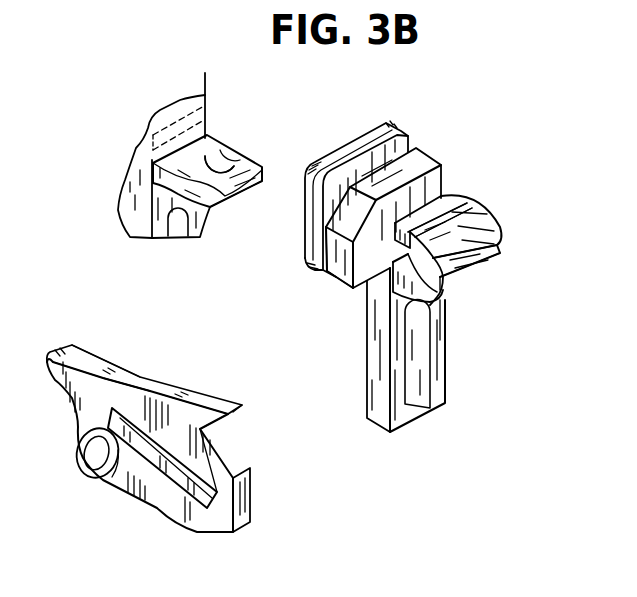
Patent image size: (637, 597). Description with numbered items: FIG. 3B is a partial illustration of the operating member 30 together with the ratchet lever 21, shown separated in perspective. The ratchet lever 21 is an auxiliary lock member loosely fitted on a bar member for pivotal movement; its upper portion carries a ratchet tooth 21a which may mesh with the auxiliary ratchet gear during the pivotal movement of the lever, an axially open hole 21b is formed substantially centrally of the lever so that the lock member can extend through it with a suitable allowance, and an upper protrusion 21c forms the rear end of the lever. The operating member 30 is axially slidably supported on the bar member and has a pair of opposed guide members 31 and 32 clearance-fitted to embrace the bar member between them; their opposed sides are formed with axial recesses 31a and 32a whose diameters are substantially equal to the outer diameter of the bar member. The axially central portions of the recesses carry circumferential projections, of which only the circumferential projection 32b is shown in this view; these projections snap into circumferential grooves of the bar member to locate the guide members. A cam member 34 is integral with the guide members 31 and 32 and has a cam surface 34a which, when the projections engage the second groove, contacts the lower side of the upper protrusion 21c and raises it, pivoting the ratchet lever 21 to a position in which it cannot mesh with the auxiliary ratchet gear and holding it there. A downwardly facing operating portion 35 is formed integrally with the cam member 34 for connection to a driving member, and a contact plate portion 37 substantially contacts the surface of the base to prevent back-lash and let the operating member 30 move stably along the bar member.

The ratchet lever 21 is at (155, 500).
The ratchet tooth 21a is at (208, 410).
The axially open hole 21b is at (192, 463).
The upper protrusion 21c is at (93, 367).
The operating member 30 is at (470, 287).
The guide member 31 is at (472, 215).
The axial recess 31a is at (416, 225).
The guide member 32 is at (210, 207).
The axial recess 32a is at (243, 190).
The circumferential projection 32b is at (233, 170).
The cam member 34 is at (423, 156).
The cam surface 34a is at (336, 272).
The operating portion 35 is at (367, 378).
The contact plate portion 37 is at (367, 135).